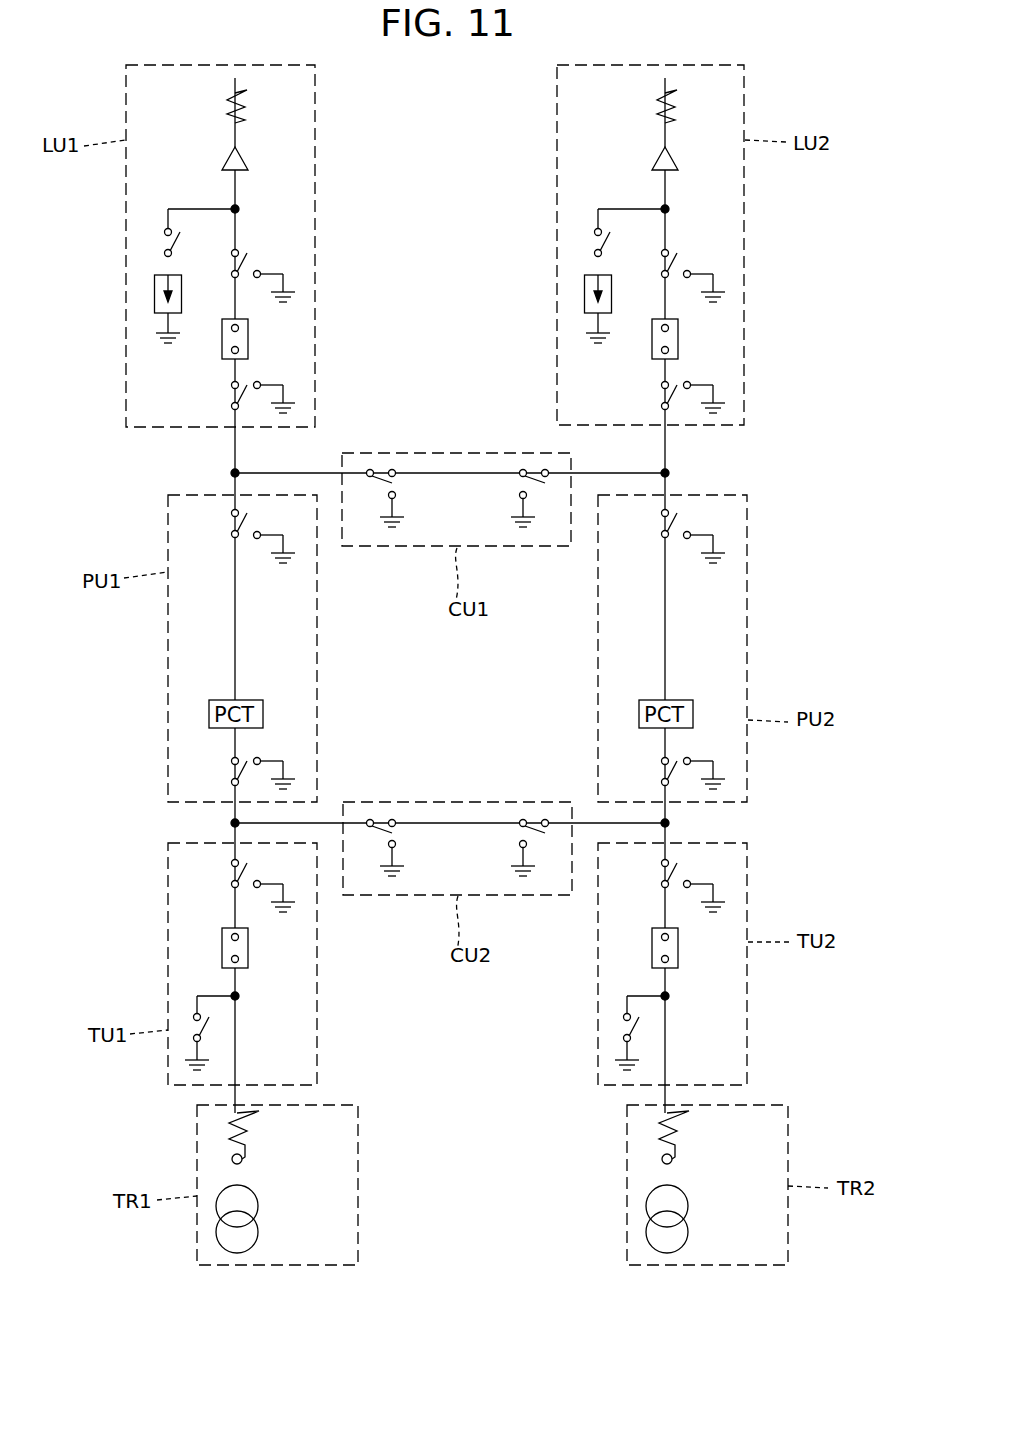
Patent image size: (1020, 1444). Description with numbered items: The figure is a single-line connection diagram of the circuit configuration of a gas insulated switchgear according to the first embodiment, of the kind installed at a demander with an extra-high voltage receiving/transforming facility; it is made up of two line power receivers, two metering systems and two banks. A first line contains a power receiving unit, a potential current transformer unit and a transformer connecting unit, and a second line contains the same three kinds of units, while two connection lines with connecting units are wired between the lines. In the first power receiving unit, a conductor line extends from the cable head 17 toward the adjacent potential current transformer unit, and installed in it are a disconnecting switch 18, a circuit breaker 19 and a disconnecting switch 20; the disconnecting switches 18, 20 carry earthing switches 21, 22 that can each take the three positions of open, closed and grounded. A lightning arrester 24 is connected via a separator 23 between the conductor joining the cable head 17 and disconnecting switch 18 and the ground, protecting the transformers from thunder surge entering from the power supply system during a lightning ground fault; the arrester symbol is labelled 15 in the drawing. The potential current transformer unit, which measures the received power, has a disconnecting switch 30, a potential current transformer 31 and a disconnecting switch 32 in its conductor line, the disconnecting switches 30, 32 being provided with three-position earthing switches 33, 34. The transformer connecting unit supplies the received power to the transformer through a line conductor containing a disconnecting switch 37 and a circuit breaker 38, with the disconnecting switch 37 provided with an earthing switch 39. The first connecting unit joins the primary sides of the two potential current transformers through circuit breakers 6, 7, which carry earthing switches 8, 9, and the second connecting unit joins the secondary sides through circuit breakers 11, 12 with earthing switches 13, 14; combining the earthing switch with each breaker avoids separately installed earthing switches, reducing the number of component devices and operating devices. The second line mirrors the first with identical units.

The circuit breaker 6 is at (383, 468).
The circuit breaker 7 is at (530, 466).
The earthing switch 8 is at (392, 548).
The earthing switch 9 is at (523, 548).
The circuit breaker 11 is at (380, 811).
The circuit breaker 12 is at (530, 811).
The earthing switch 13 is at (392, 897).
The earthing switch 14 is at (524, 897).
The lightning arrester 15 is at (244, 101).
The cable head 17 is at (247, 160).
The disconnecting switch 18 is at (252, 264).
The circuit breaker 19 is at (249, 336).
The disconnecting switch 20 is at (231, 400).
The earthing switch 21 is at (296, 293).
The earthing switch 22 is at (296, 398).
The separator 23 is at (163, 244).
The lightning arrester 24 is at (154, 300).
The disconnecting switch 30 is at (226, 523).
The potential current transformer 31 is at (209, 713).
The disconnecting switch 32 is at (226, 773).
The earthing switch 33 is at (283, 572).
The earthing switch 34 is at (292, 766).
The disconnecting switch 37 is at (226, 874).
The circuit breaker 38 is at (223, 949).
The earthing switch 39 is at (286, 920).